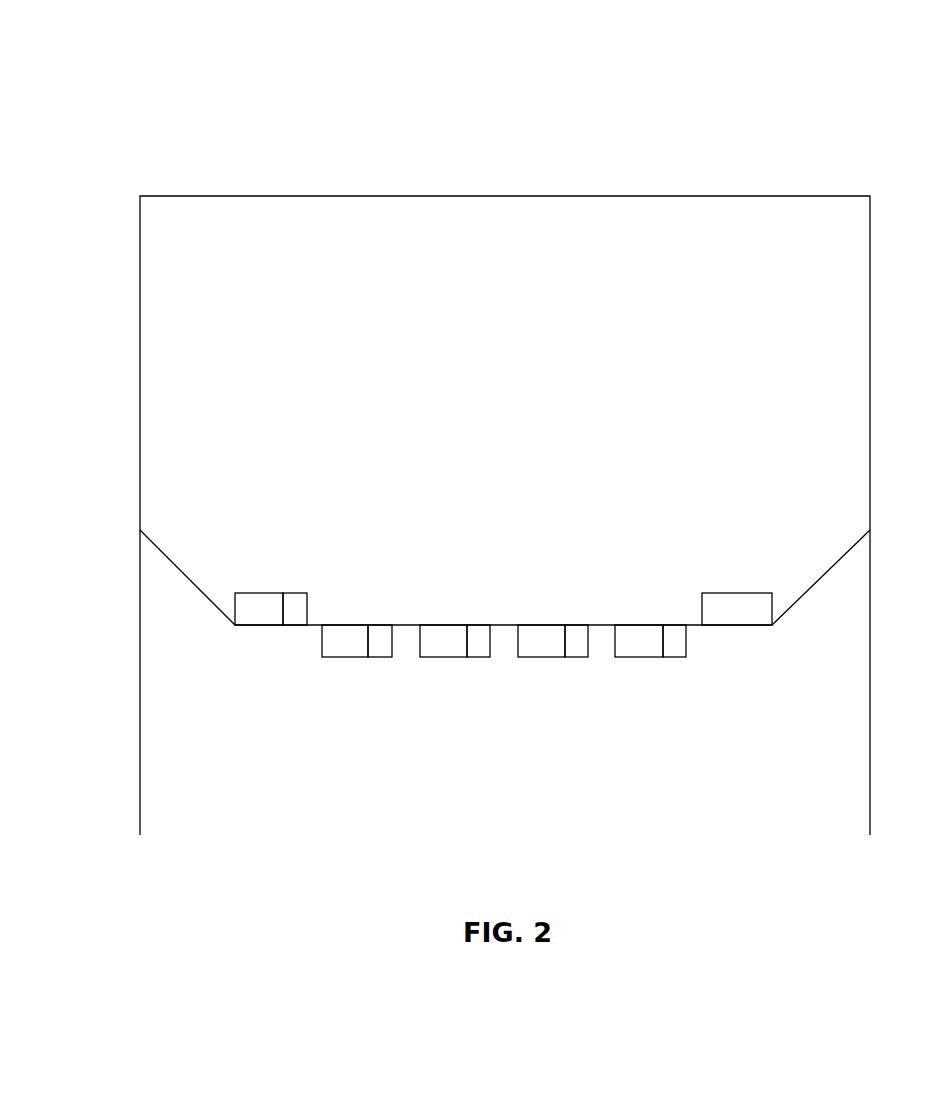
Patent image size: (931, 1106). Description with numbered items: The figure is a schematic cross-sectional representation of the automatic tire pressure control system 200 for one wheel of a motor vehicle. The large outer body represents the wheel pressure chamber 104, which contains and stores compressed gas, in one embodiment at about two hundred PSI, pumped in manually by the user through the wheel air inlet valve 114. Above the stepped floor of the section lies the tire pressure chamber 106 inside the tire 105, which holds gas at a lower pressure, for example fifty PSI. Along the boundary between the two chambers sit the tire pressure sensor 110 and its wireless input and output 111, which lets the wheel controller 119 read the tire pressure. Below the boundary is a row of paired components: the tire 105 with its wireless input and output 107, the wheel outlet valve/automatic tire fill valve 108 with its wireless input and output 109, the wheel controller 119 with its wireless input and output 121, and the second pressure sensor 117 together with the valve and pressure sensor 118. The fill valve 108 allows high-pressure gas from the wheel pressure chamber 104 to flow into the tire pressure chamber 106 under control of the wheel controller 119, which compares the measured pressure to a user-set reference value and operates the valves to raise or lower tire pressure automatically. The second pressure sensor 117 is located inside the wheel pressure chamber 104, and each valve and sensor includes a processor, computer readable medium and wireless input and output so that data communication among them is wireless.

The semiconductor device package 200 is at (148, 93).
The wheel pressure chamber 104 is at (536, 839).
The tire pressure chamber 106 is at (536, 386).
The tire pressure sensor 110 is at (250, 606).
The wireless input and output 111 is at (295, 606).
The wheel air inlet valve 114 is at (735, 617).
The tire 105 is at (340, 645).
The wireless input and output 107 is at (382, 645).
The wheel outlet valve/automatic tire fill valve 108 is at (437, 645).
The wireless input and output 109 is at (480, 645).
The wheel controller 119 is at (540, 645).
The wireless input and output 121 is at (582, 645).
The second pressure sensor 117 is at (633, 645).
The valve and pressure sensor 118 is at (677, 645).